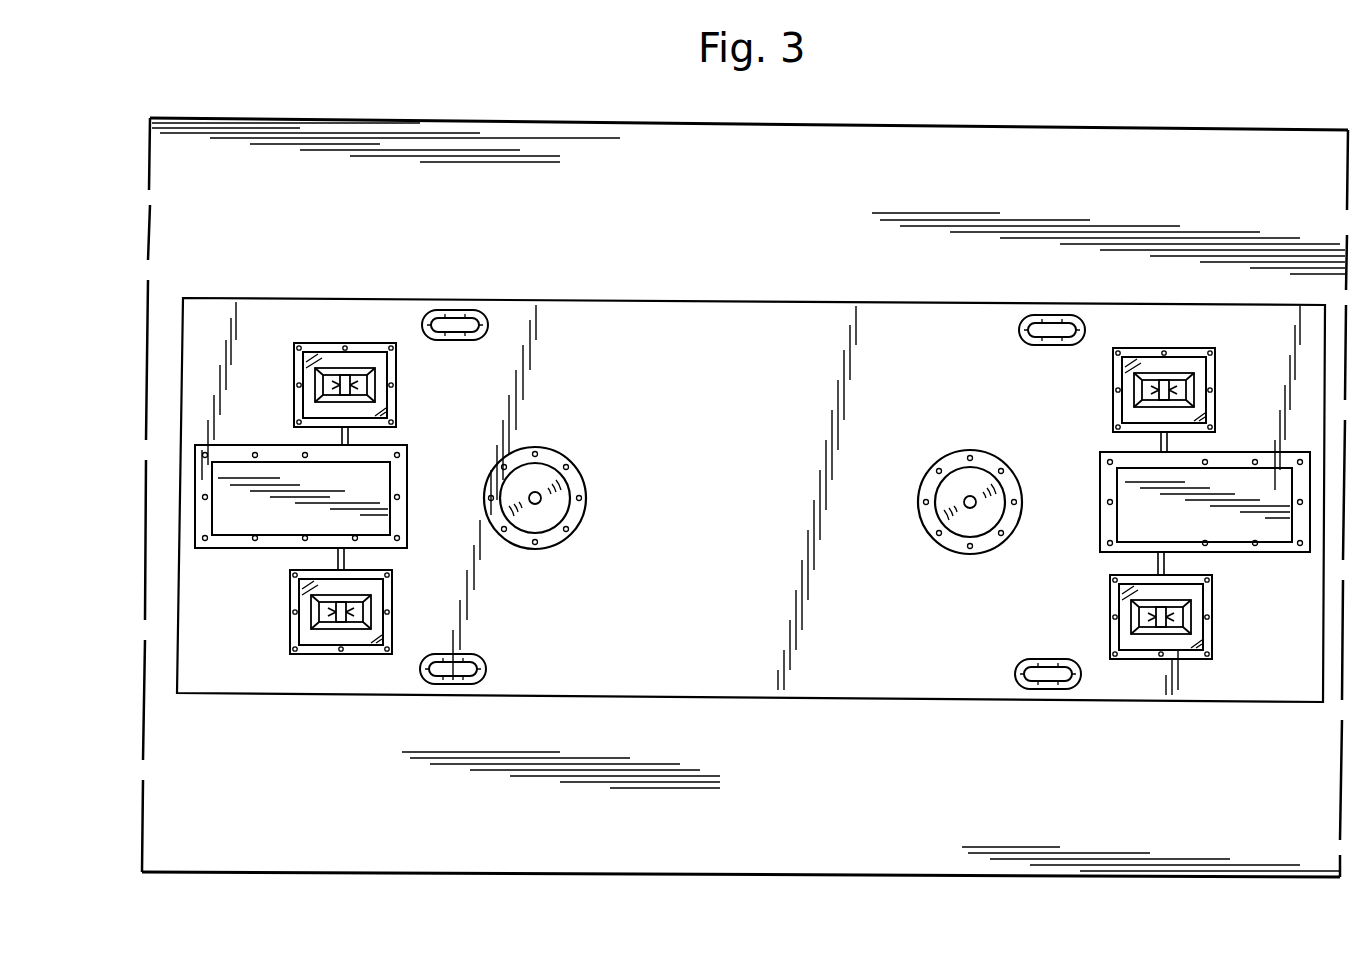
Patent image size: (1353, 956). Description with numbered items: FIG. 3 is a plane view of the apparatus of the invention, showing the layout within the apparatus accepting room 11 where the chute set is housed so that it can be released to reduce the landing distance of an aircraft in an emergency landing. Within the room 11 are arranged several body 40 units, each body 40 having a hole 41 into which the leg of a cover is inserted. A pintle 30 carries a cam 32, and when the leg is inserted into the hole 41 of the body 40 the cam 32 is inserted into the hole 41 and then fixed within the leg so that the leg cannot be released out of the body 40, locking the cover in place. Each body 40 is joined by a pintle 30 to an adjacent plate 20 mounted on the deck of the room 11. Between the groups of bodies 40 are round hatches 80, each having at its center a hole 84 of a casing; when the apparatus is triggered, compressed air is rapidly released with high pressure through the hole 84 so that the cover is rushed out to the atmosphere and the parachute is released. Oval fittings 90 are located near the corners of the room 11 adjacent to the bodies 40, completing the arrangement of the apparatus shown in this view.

The apparatus accepting room 11 is at (712, 330).
The mounting plate 20 is at (391, 480).
The pintle 30 is at (352, 437).
The cam 32 is at (352, 386).
The body 40 is at (390, 404).
The hole 41 is at (322, 388).
The hatch 80 is at (554, 536).
The hole 84 is at (540, 499).
The oval fitting 90 is at (455, 322).